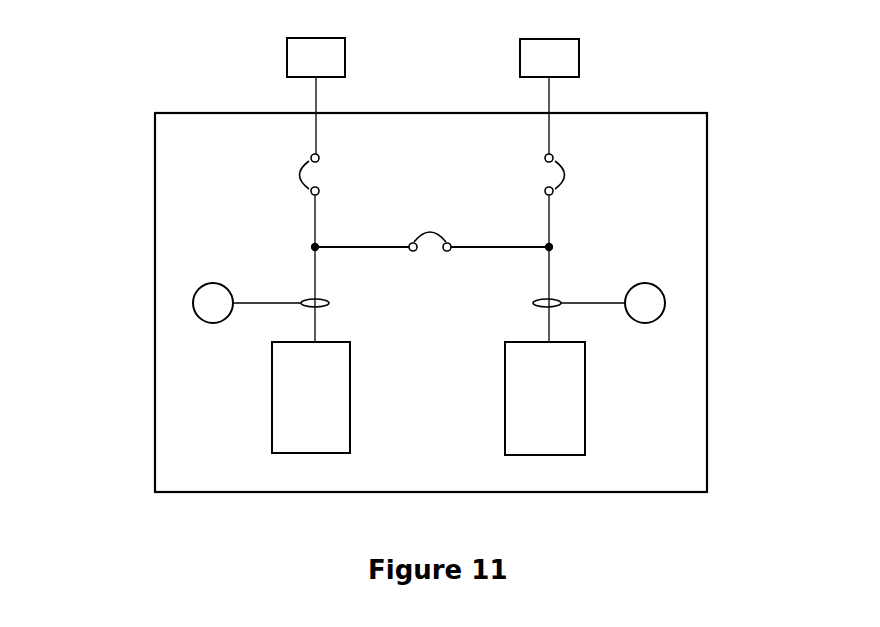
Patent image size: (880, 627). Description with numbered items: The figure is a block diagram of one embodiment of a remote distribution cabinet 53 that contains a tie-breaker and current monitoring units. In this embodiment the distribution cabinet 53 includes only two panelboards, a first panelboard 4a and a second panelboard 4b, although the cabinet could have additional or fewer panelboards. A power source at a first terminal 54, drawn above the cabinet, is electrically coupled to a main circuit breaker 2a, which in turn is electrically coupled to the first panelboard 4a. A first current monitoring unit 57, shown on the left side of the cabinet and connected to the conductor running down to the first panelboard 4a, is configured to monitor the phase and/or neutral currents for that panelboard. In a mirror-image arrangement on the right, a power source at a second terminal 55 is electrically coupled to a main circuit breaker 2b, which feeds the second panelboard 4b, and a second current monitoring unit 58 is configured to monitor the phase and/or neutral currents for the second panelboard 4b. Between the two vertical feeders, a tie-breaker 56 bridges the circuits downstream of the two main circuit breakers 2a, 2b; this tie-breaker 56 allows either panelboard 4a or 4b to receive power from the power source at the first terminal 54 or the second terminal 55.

The distribution cabinet 53 is at (158, 113).
The first terminal 54 is at (348, 55).
The second terminal 55 is at (582, 55).
The main circuit breaker 2a is at (302, 174).
The main circuit breaker 2b is at (566, 172).
The tie-breaker 56 is at (456, 218).
The first panelboard 4a is at (332, 412).
The second panelboard 4b is at (565, 412).
The first current monitoring unit 57 is at (193, 302).
The second current monitoring unit 58 is at (665, 303).